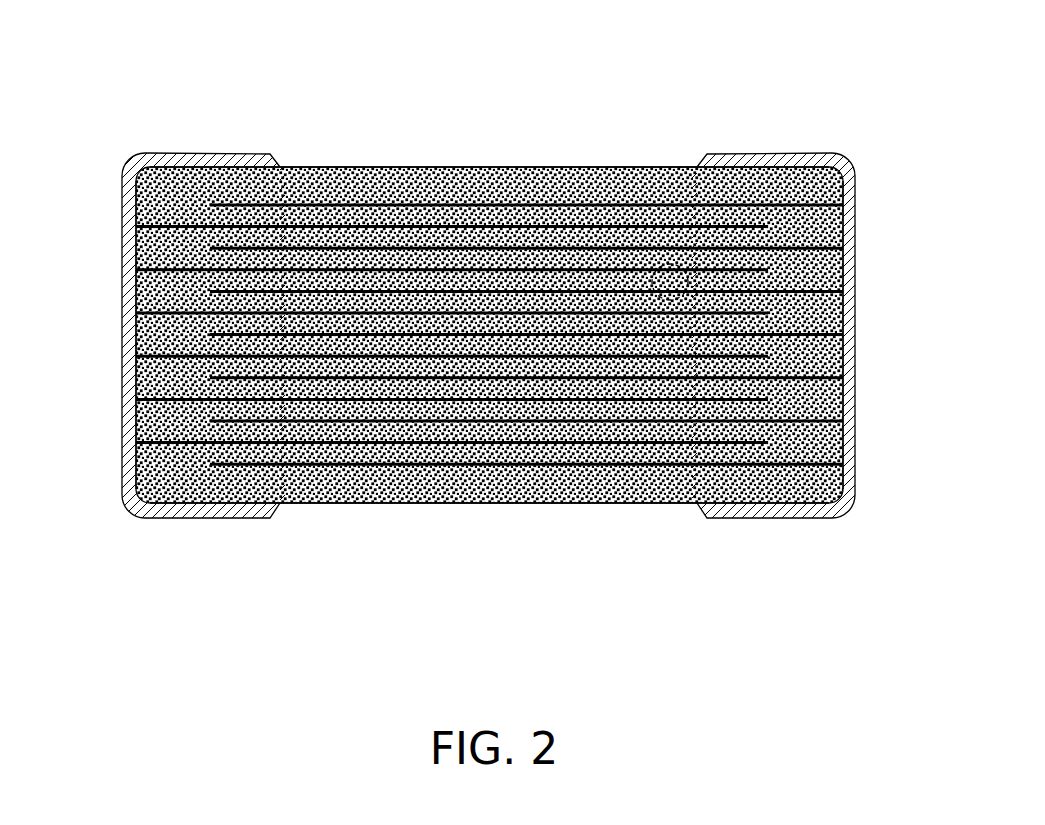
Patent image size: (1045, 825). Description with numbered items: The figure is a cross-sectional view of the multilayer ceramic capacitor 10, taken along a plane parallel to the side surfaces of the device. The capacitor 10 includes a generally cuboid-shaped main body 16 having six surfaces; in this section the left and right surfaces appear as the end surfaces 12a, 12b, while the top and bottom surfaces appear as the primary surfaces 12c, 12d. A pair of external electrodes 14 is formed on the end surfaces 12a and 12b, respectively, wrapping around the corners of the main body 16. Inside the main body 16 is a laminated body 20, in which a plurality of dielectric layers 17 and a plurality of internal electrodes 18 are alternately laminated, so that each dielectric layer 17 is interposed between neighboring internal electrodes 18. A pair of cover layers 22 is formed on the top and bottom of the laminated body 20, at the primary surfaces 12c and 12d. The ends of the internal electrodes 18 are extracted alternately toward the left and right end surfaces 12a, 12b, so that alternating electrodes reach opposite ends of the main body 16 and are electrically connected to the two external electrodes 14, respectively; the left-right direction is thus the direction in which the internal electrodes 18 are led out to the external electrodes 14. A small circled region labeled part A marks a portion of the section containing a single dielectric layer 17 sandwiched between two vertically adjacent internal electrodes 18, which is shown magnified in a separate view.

The multilayer ceramic capacitor 10 is at (652, 112).
The end surface 12a is at (124, 294).
The end surface 12b is at (855, 275).
The primary surface 12c is at (408, 166).
The primary surface 12d is at (422, 503).
The external electrode 14 is at (122, 218).
The main body 16 is at (455, 52).
The dielectric layer 17 is at (433, 265).
The internal electrode 18 is at (508, 245).
The laminated body 20 is at (508, 97).
The cover layer 22 is at (442, 185).
The part A is at (680, 265).